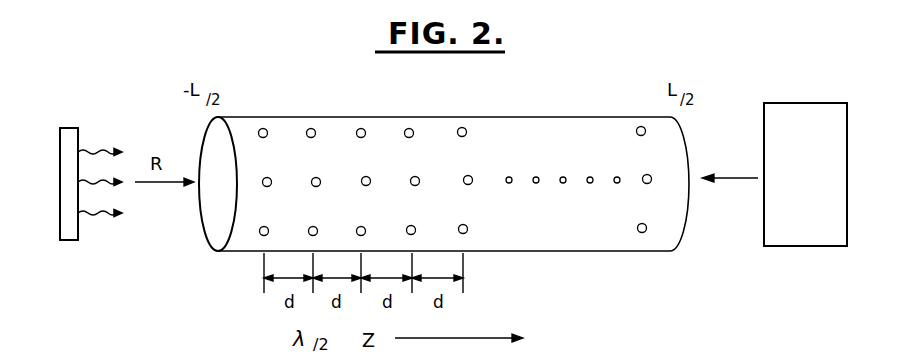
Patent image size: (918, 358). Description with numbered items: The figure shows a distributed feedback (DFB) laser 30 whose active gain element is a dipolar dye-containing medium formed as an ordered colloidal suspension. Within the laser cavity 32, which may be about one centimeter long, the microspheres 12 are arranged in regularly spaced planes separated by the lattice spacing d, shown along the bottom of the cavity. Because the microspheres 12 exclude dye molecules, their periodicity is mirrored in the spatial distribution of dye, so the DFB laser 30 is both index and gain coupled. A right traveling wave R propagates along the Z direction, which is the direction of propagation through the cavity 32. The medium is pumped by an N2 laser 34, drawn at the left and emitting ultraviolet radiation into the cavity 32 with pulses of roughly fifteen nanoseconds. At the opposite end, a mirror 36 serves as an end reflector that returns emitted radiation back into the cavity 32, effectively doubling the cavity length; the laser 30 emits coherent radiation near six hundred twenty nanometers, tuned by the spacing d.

The microspheres 12 is at (407, 128).
The DFB laser 30 is at (449, 189).
The laser cavity 32 is at (565, 115).
The N2 laser 34 is at (68, 126).
The mirror 36 is at (794, 102).